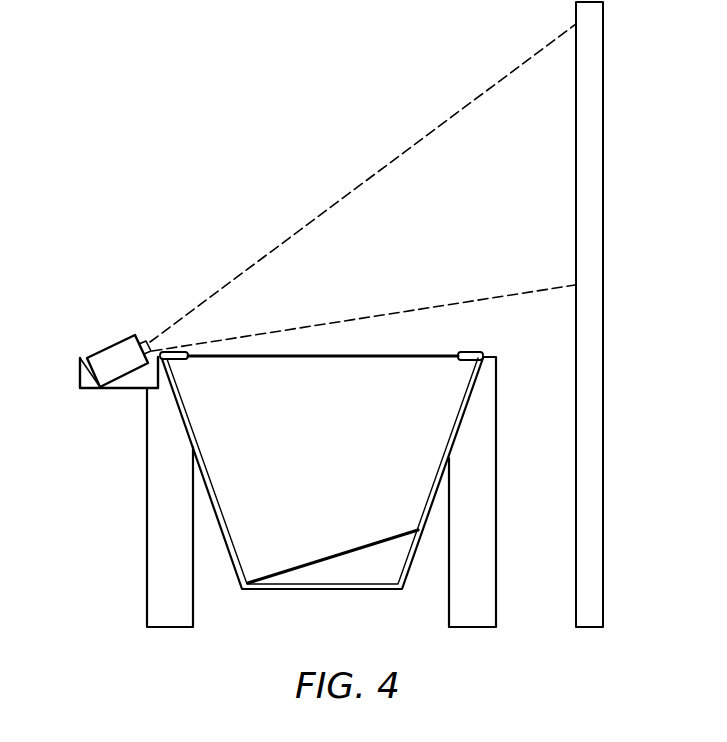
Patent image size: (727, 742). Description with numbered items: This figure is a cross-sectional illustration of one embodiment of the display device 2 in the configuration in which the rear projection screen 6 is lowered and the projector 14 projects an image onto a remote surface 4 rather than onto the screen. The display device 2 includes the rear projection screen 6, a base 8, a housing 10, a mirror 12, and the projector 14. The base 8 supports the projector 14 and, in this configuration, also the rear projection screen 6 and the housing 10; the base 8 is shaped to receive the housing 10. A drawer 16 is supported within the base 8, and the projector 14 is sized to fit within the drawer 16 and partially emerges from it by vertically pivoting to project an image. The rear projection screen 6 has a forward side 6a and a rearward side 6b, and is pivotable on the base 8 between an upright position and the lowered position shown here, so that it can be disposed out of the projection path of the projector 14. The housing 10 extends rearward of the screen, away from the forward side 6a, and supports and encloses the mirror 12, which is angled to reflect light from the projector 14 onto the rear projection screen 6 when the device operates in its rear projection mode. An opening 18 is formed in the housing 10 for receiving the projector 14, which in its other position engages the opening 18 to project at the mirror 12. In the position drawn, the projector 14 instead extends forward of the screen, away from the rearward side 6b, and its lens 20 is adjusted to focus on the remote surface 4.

The display device 2 is at (226, 133).
The remote surface 4 is at (576, 118).
The rear projection screen 6 is at (321, 472).
The forward side 6a is at (330, 358).
The rearward side 6b is at (407, 353).
The base 8 is at (147, 540).
The housing 10 is at (323, 590).
The mirror 12 is at (394, 533).
The projector 14 is at (98, 356).
The drawer 16 is at (80, 378).
The opening 18 is at (168, 380).
The lens 20 is at (146, 342).